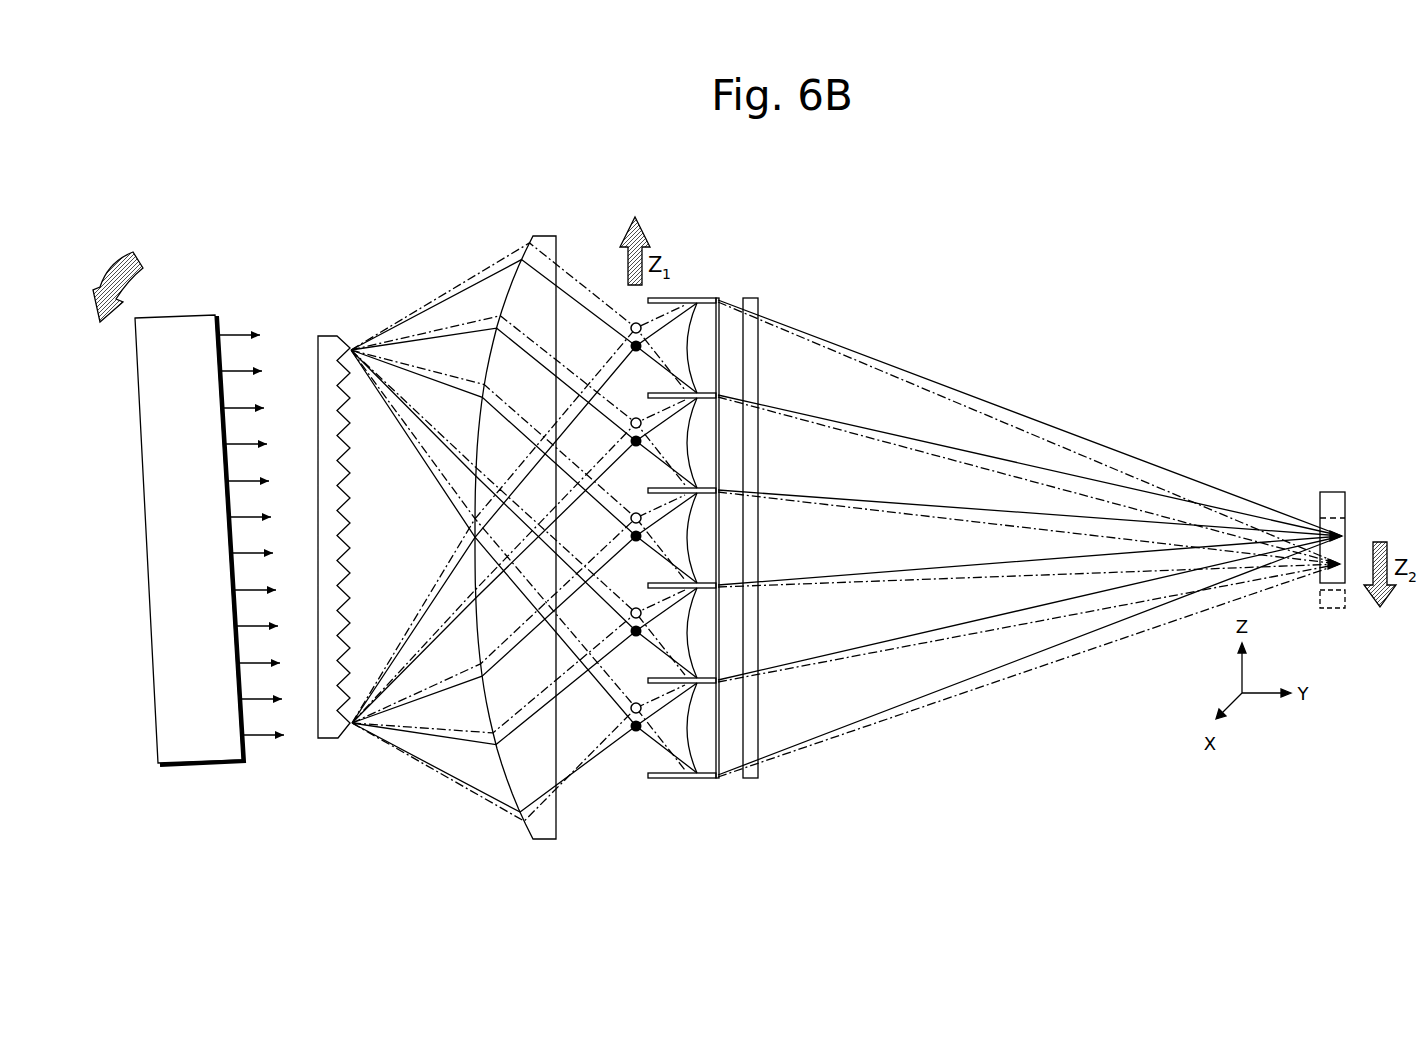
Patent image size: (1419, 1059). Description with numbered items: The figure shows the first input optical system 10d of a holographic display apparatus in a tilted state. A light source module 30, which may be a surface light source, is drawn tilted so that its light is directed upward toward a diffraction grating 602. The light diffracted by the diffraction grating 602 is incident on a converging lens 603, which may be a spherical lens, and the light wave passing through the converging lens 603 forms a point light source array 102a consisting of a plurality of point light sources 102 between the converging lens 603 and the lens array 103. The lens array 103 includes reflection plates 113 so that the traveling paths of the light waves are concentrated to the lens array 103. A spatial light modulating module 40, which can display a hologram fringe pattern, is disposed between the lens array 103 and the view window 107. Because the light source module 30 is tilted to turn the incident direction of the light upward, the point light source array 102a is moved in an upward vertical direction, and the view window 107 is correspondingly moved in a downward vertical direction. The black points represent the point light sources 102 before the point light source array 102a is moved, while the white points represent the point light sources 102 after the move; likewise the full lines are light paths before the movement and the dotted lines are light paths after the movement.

The light source module 30 is at (180, 318).
The diffraction grating 602 is at (330, 336).
The converging lens 603 is at (553, 236).
The point light sources 102 is at (630, 323).
The point light source array 102a is at (636, 736).
The reflection plates 113 is at (677, 298).
The lens array 103 is at (710, 450).
The spatial light modulating module 40 is at (753, 298).
The view window 107 is at (1333, 492).
The first input optical system 10d is at (1135, 238).